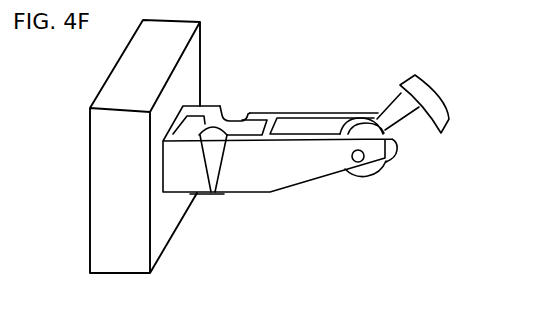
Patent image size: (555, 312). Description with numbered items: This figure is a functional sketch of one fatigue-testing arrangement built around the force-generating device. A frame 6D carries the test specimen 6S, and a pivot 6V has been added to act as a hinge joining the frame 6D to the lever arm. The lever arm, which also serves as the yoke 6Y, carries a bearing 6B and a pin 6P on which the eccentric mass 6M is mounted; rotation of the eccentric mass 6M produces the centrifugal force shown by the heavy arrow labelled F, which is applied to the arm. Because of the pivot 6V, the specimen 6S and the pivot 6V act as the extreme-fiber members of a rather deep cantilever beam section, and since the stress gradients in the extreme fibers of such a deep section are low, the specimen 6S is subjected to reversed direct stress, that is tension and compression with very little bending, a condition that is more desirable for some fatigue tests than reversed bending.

The frame 6D is at (145, 146).
The yoke 6Y is at (258, 178).
The test specimen 6S is at (205, 123).
The pivot 6V is at (214, 193).
The bearing 6B is at (361, 176).
The pin 6P is at (363, 161).
The eccentric mass 6M is at (439, 134).
The centrifugal force F is at (432, 98).